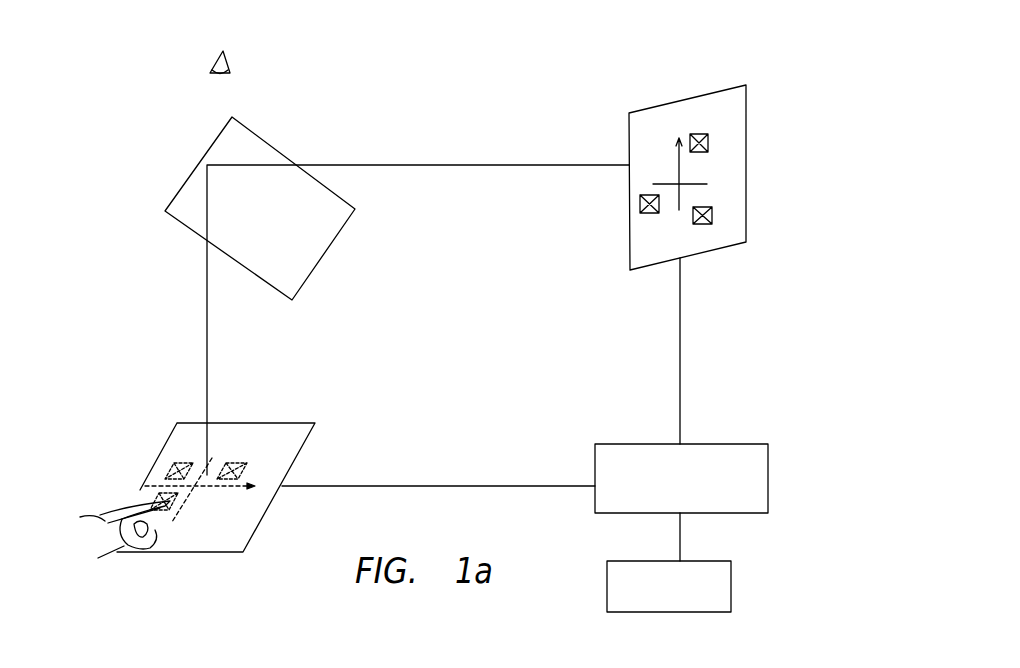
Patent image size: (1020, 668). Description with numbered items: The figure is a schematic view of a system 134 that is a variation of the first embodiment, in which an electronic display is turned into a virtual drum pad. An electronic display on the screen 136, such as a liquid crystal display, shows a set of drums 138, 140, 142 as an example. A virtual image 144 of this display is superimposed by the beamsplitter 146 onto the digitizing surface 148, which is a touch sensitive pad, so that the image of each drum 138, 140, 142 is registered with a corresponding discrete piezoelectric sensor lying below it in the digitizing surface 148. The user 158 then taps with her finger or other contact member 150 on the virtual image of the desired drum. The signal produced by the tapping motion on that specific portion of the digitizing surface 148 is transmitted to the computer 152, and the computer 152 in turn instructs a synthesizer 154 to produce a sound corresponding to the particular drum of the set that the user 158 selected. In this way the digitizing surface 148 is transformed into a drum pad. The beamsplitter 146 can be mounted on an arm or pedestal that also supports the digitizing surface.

The system 134 is at (453, 127).
The screen 136 is at (737, 214).
The drum 138 is at (700, 224).
The drum 140 is at (708, 143).
The drum 142 is at (640, 205).
The virtual image 144 is at (685, 181).
The beamsplitter 146 is at (310, 248).
The digitizing surface 148 is at (280, 435).
The contact member 150 is at (110, 530).
The computer 152 is at (762, 480).
The synthesizer 154 is at (715, 583).
The user 158 is at (228, 62).